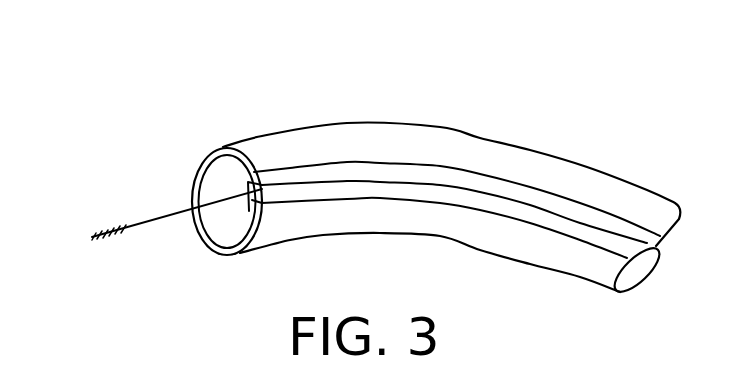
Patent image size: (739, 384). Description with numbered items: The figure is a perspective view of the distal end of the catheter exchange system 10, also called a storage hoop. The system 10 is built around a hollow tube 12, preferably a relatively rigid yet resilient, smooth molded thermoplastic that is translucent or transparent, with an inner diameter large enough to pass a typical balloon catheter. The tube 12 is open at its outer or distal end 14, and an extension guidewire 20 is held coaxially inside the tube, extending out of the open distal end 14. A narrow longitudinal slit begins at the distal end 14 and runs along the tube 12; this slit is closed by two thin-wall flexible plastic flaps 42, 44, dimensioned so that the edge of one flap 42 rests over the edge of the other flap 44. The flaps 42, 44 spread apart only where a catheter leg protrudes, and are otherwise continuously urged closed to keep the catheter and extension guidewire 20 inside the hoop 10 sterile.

The catheter exchange system 10 is at (528, 130).
The tube 12 is at (570, 180).
The distal end 14 is at (237, 130).
The extension guidewire 20 is at (160, 212).
The flap 42 is at (350, 164).
The flap 44 is at (260, 238).